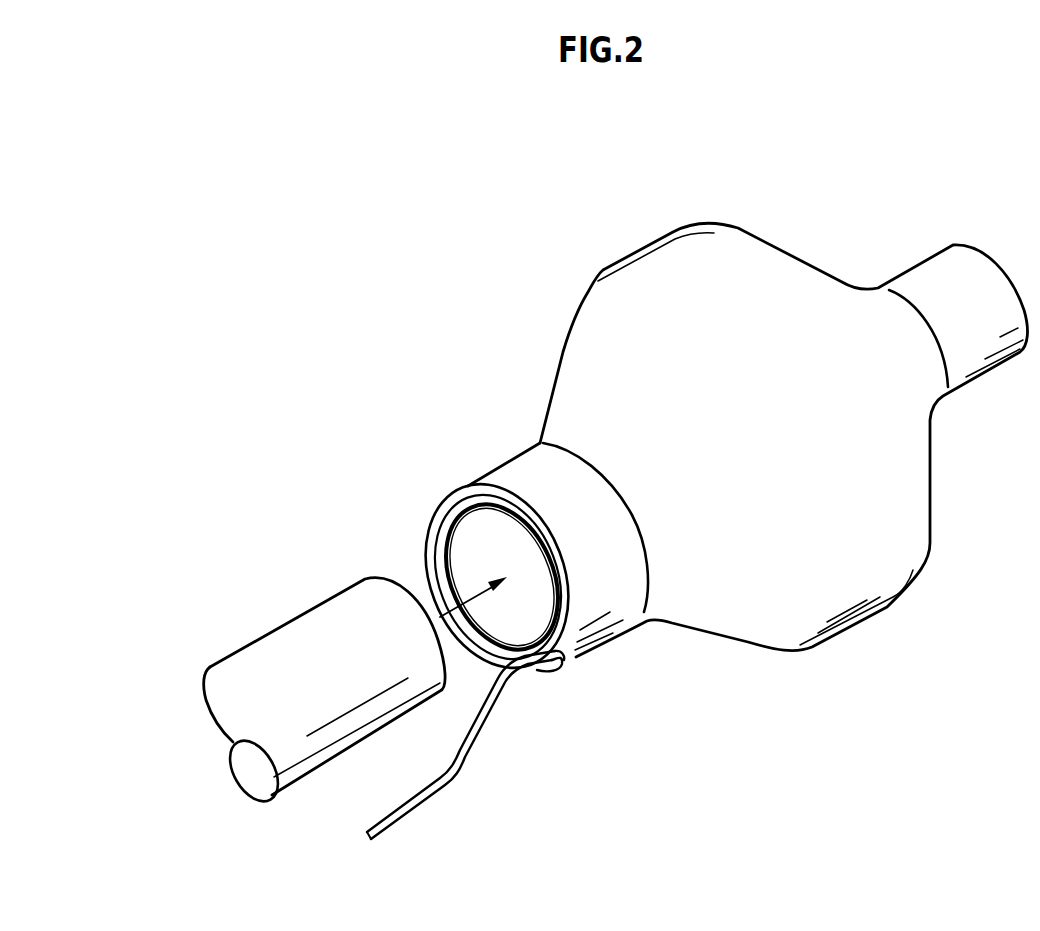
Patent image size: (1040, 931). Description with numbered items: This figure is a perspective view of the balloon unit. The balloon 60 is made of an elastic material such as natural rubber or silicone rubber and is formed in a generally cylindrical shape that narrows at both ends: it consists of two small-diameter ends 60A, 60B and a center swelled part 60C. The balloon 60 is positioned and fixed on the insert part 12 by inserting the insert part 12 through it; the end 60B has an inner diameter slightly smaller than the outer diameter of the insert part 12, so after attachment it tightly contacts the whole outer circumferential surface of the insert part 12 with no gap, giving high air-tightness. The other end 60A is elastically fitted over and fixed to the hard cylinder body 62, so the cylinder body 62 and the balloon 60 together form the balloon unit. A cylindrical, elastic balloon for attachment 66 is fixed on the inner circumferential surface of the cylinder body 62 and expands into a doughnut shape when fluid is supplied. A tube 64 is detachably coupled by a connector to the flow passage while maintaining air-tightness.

The insert part 12 is at (273, 647).
The balloon 60 is at (598, 257).
The end 60A is at (507, 465).
The end 60B is at (930, 273).
The center swelled part 60C is at (673, 230).
The cylinder body 62 is at (450, 513).
The tube 64 is at (467, 753).
The balloon for attachment 66 is at (543, 677).